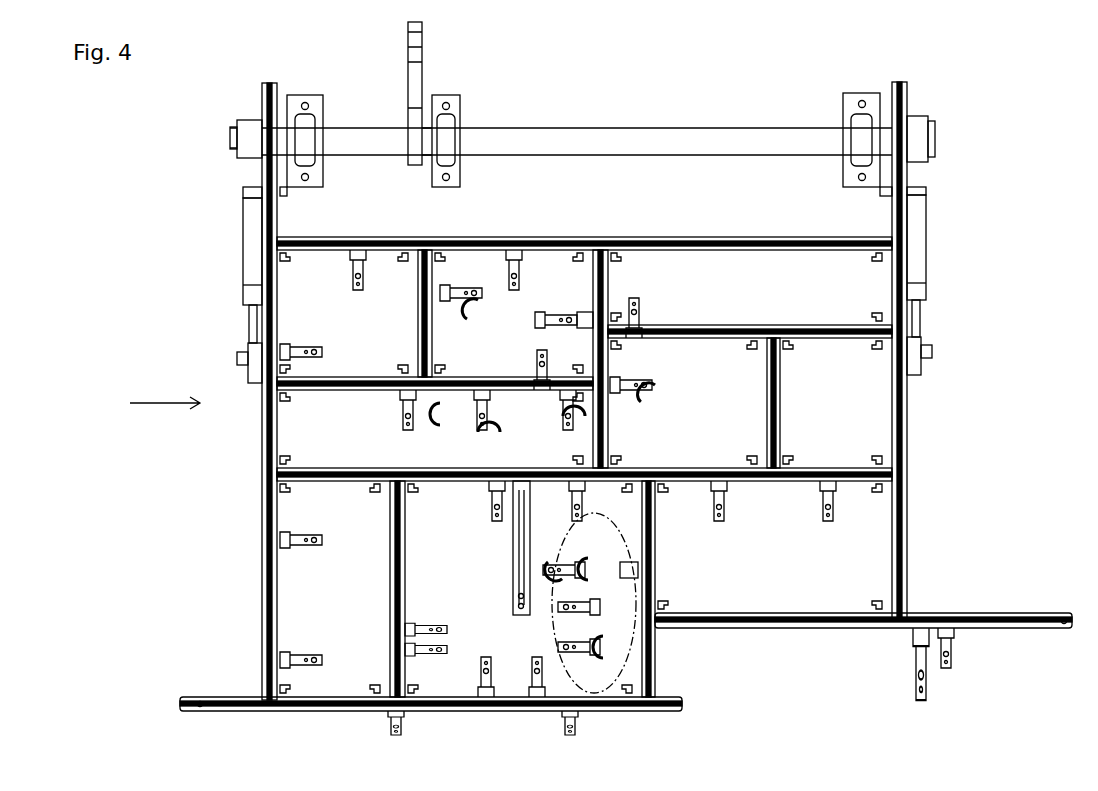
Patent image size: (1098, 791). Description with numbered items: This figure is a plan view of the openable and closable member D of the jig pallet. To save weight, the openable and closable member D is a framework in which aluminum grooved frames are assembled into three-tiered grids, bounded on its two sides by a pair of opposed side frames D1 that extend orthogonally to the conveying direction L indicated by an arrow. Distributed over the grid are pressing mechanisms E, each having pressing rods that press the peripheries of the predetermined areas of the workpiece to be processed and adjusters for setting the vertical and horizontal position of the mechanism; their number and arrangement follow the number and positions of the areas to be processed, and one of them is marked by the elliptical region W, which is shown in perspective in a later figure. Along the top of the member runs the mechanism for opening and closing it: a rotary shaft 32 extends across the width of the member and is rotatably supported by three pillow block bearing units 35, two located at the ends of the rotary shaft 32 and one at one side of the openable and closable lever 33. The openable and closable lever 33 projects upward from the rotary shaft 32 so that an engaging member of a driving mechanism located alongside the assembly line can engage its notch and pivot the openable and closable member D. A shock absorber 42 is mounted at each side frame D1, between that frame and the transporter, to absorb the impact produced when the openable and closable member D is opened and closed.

The rotary shaft 32 is at (640, 137).
The openable and closable lever 33 is at (415, 72).
The pillow block bearing units 35 is at (305, 125).
The shock absorber 42 is at (250, 236).
The pressing mechanism E is at (655, 305).
The openable and closable member D is at (921, 532).
The side frame D1 is at (262, 545).
The conveying direction L is at (160, 404).
The elliptical region W is at (530, 705).